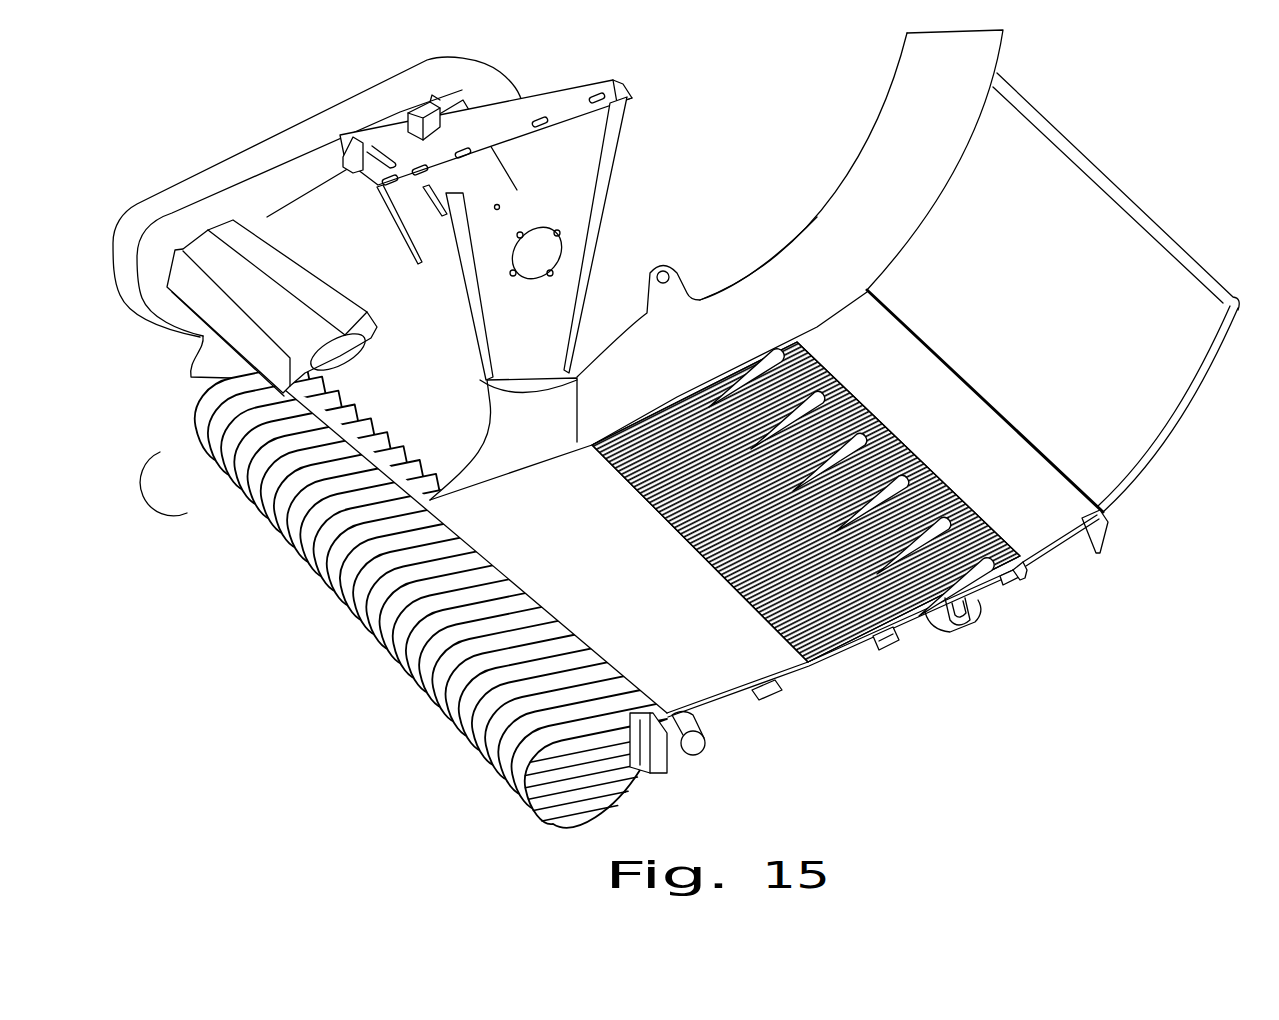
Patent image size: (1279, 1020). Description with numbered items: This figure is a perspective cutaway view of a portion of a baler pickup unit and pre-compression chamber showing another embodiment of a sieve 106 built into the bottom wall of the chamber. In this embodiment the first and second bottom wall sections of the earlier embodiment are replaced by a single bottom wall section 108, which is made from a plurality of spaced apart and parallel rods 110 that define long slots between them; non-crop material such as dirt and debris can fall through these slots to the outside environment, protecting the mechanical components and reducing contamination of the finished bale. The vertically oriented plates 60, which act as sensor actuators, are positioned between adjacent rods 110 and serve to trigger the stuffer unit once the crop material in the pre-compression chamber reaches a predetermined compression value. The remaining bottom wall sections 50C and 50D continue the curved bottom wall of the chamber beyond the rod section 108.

The vertically oriented plates 60 is at (885, 440).
The bottom wall section 50D is at (1163, 443).
The bottom wall section 50C is at (1077, 537).
The rods 110 is at (830, 662).
The bottom wall section 108 is at (937, 626).
The sieve 106 is at (980, 630).